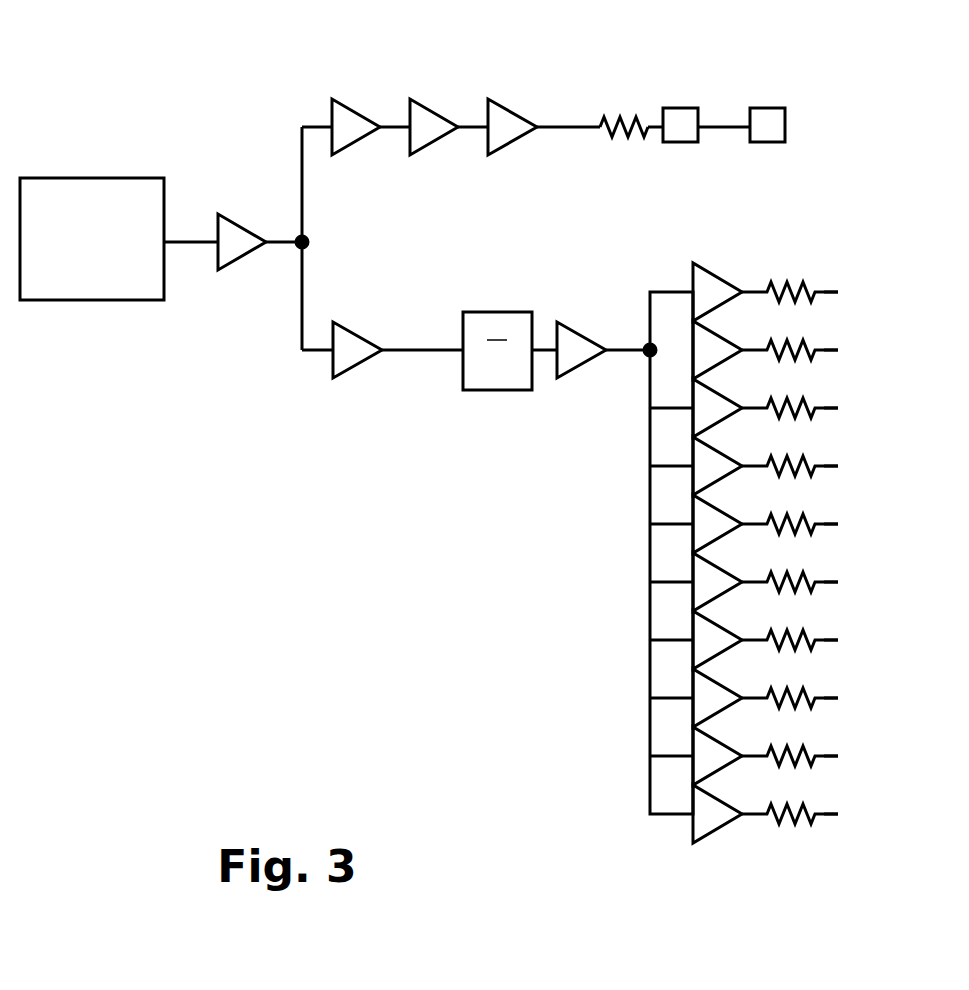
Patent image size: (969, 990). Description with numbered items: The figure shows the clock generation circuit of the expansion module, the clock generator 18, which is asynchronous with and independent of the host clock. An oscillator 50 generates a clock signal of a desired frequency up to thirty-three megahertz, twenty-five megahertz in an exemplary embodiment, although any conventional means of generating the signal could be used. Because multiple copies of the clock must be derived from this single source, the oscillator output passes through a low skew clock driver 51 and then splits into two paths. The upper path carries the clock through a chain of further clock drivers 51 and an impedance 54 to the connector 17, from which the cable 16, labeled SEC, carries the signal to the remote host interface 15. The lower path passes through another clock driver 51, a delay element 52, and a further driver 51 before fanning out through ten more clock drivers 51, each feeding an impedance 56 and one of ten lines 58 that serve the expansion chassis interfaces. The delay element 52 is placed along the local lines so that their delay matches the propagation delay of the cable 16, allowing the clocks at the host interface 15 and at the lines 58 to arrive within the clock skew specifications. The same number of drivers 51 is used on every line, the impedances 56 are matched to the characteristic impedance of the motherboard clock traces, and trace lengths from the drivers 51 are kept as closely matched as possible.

The clock generator 18 is at (75, 55).
The oscillator 50 is at (137, 203).
The low skew clock drivers 51 is at (237, 226).
The delay element 52 is at (497, 351).
The resistor 54 is at (620, 112).
The connector 17 is at (678, 107).
The cable 16 is at (724, 128).
The host interface 15 is at (775, 107).
The impedances 56 is at (787, 287).
The lines 58 is at (833, 291).